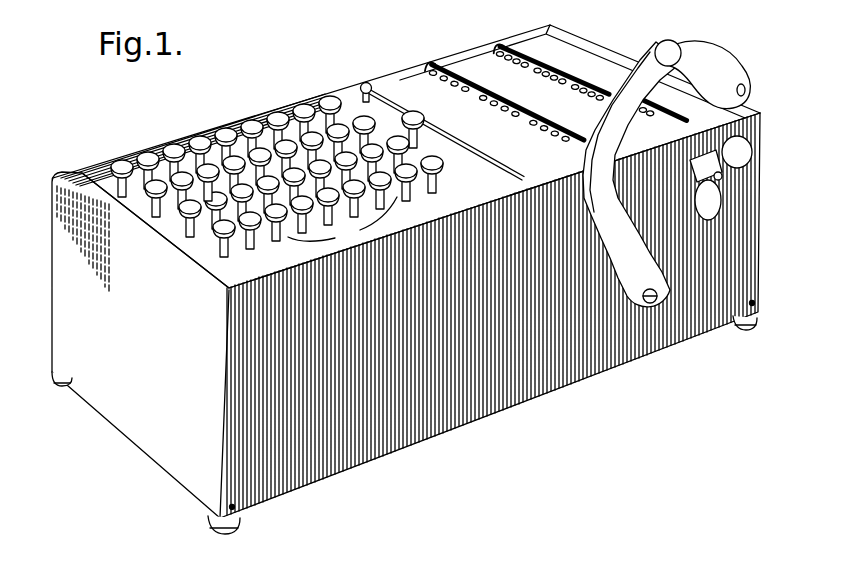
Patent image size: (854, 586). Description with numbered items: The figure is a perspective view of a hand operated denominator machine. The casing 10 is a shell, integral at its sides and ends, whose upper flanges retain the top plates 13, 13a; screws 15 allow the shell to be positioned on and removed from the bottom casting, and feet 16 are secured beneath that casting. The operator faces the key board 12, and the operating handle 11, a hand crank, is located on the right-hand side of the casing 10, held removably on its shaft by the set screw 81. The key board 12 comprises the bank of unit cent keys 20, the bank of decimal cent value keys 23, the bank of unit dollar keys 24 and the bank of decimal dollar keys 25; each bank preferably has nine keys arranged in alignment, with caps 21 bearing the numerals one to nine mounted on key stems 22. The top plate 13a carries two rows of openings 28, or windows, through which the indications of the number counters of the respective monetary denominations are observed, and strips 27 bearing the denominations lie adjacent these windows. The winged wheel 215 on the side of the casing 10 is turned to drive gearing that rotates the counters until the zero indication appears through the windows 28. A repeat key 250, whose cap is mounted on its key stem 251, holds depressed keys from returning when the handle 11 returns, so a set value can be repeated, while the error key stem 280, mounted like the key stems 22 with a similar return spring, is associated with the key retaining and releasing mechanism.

The casing 10 is at (348, 448).
The operating handle 11 is at (697, 63).
The key board 12 is at (268, 130).
The top plate 13 is at (478, 178).
The top plate 13a is at (487, 65).
The screws 15 is at (738, 326).
The feet 16 is at (752, 326).
The bank of unit cent keys 20 is at (342, 219).
The caps 21 is at (143, 150).
The key stems 22 is at (212, 182).
The bank of decimal cent value keys 23 is at (232, 253).
The bank of unit dollar keys 24 is at (152, 218).
The bank of decimal dollar keys 25 is at (116, 198).
The strips 27 is at (600, 81).
The openings 28 is at (542, 133).
The set screw 81 is at (648, 288).
The winged wheel 215 is at (740, 153).
The repeat key 250 is at (414, 111).
The key stem 251 is at (421, 131).
The key stem 280 is at (366, 82).